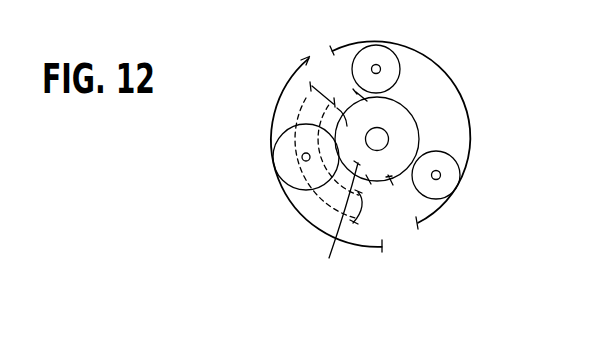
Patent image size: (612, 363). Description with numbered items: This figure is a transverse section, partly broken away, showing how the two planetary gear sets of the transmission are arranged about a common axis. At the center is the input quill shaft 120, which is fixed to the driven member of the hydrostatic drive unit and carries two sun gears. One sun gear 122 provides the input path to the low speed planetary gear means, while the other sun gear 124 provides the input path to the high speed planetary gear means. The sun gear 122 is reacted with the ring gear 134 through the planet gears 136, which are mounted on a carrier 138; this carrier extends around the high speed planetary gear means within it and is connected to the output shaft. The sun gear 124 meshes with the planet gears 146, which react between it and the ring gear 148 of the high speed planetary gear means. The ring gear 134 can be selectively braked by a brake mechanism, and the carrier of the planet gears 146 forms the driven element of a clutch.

The input quill shaft 120 is at (382, 131).
The sun gear 122 is at (332, 224).
The sun gear 124 is at (421, 126).
The ring gear 134 is at (300, 215).
The planet gears 136 is at (284, 164).
The carrier 138 is at (311, 86).
The planet gears 146 is at (382, 56).
The ring gear 148 is at (468, 117).